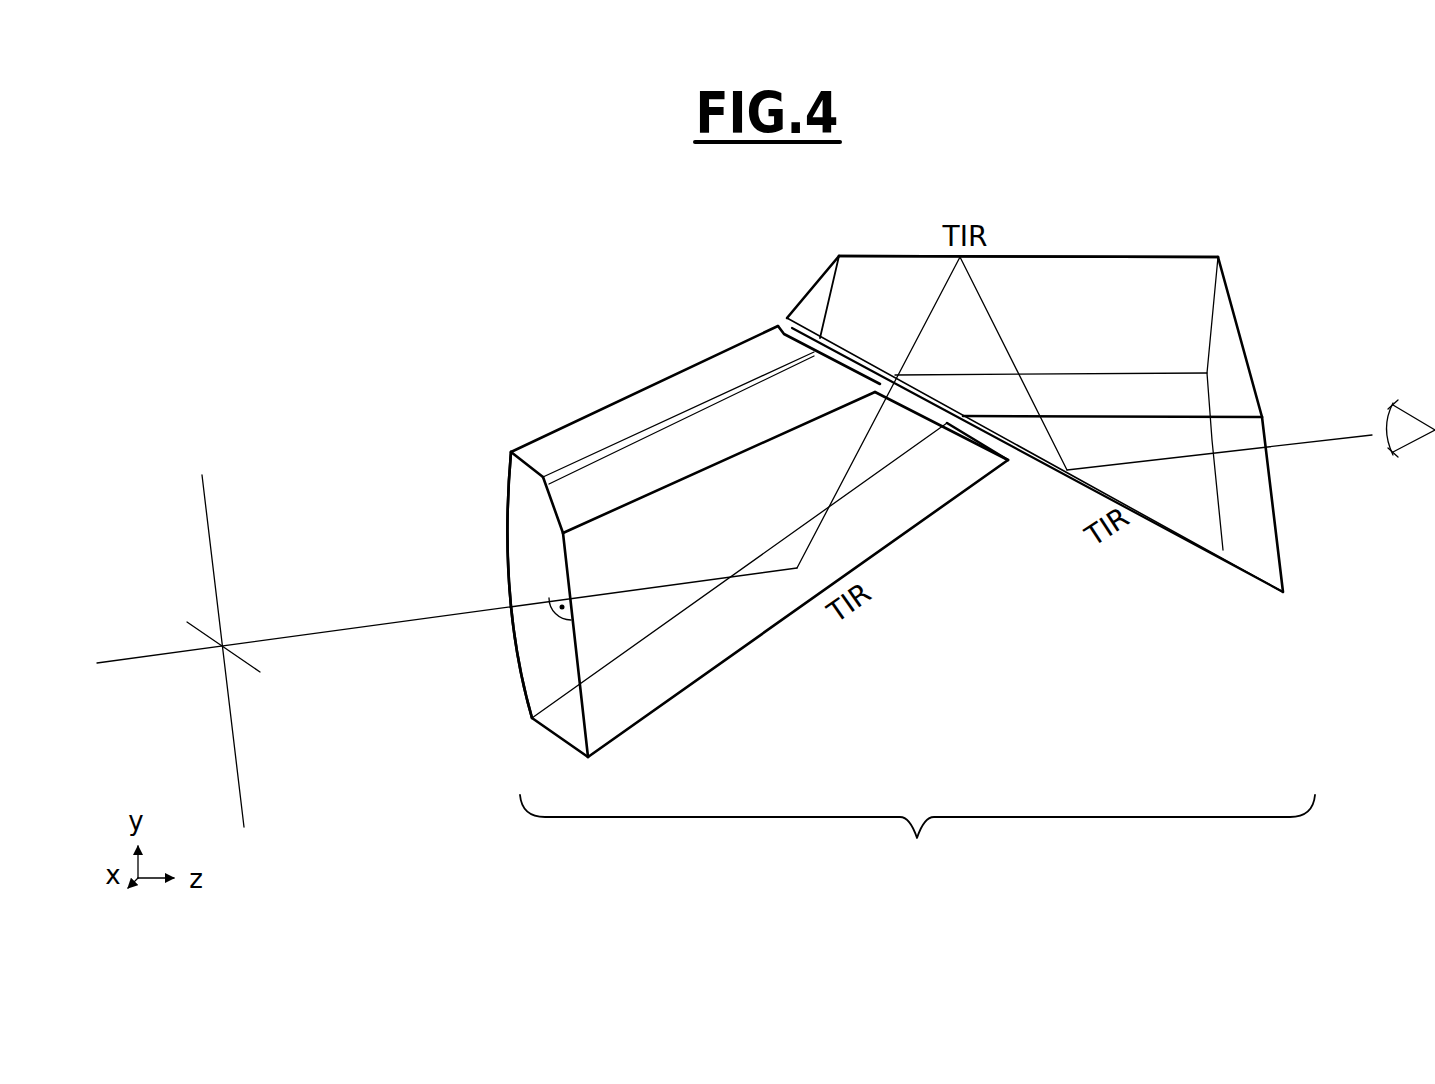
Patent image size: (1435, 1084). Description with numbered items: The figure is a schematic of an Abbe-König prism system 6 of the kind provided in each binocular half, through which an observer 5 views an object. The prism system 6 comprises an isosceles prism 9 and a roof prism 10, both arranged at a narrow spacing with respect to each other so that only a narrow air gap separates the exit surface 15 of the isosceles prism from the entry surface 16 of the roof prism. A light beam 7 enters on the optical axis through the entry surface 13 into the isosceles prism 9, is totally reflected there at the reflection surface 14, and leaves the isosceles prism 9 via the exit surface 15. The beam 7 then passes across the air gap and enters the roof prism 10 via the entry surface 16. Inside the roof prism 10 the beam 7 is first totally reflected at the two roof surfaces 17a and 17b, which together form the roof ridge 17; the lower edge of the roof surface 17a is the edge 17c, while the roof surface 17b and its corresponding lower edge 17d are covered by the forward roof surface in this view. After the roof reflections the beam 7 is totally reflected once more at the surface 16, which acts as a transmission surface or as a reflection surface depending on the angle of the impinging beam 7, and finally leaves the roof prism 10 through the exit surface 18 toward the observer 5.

The observer 5 is at (1407, 466).
The Abbe-König prism system 6 is at (917, 842).
The viewing beam 7 is at (358, 607).
The isosceles prism 9 is at (660, 358).
The roof prism 10 is at (1158, 568).
The entry surface 13 is at (528, 538).
The reflection surface 14 is at (718, 638).
The exit surface 15 is at (967, 445).
The entry surface of the roof prism 16 is at (1013, 445).
The roof ridge 17 is at (1150, 254).
The first roof surface 17a is at (1067, 285).
The second roof surface 17b is at (1242, 338).
The lower edge of the first roof surface 17c is at (1247, 413).
The lower edge of the second roof surface 17d is at (1185, 373).
The exit surface 18 is at (1263, 530).